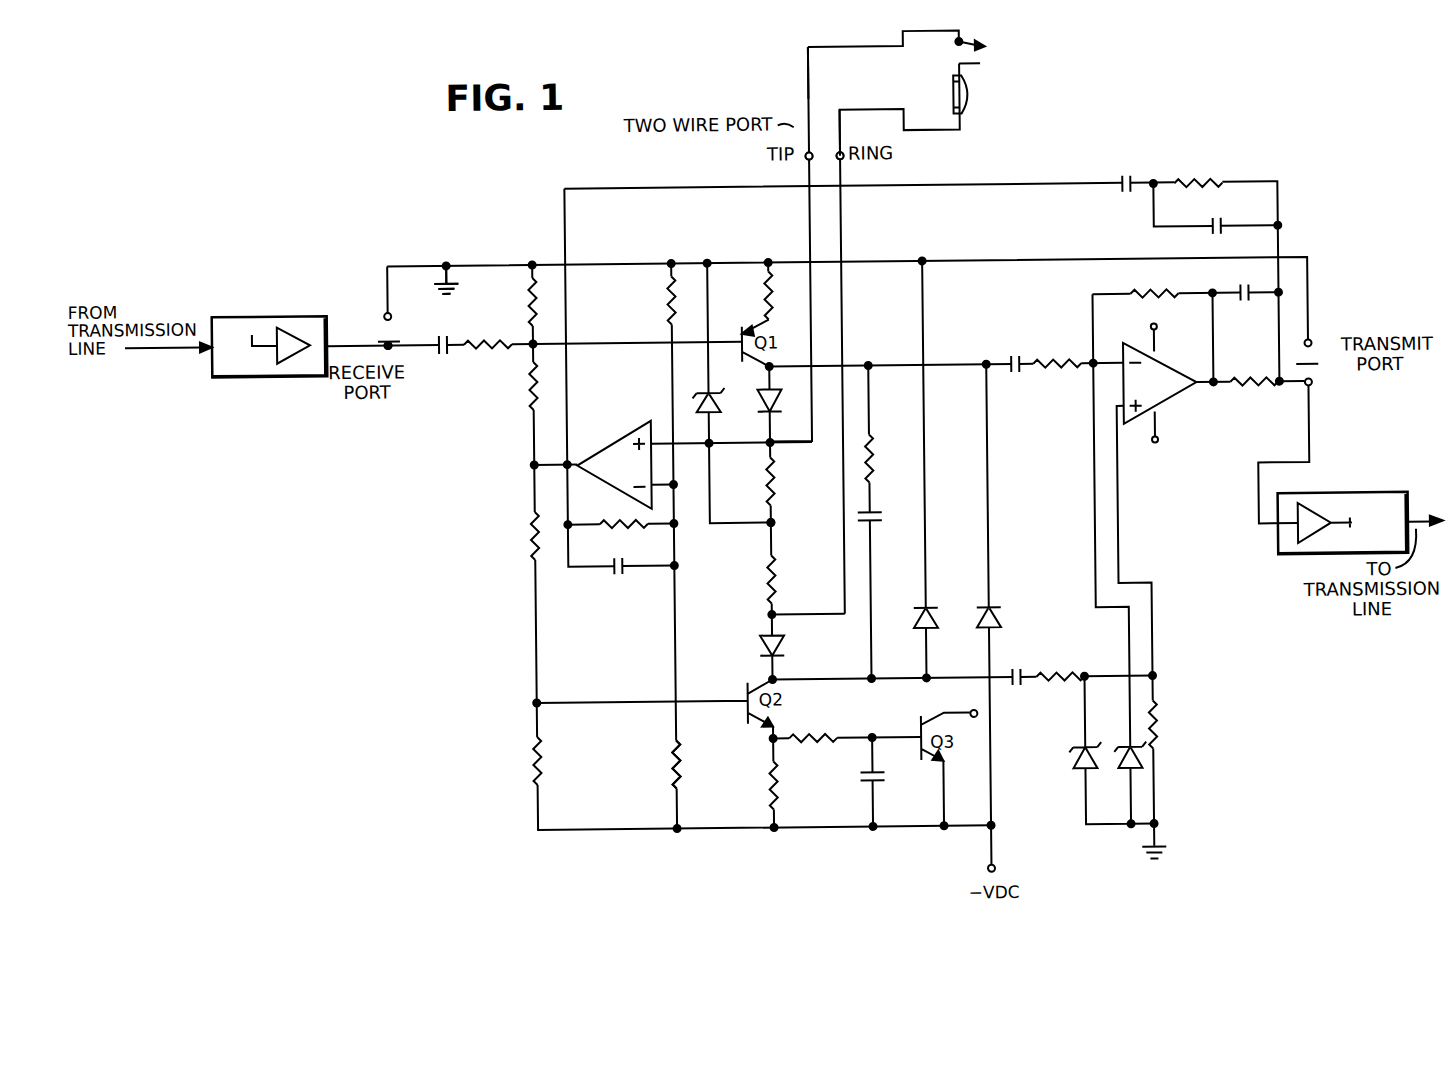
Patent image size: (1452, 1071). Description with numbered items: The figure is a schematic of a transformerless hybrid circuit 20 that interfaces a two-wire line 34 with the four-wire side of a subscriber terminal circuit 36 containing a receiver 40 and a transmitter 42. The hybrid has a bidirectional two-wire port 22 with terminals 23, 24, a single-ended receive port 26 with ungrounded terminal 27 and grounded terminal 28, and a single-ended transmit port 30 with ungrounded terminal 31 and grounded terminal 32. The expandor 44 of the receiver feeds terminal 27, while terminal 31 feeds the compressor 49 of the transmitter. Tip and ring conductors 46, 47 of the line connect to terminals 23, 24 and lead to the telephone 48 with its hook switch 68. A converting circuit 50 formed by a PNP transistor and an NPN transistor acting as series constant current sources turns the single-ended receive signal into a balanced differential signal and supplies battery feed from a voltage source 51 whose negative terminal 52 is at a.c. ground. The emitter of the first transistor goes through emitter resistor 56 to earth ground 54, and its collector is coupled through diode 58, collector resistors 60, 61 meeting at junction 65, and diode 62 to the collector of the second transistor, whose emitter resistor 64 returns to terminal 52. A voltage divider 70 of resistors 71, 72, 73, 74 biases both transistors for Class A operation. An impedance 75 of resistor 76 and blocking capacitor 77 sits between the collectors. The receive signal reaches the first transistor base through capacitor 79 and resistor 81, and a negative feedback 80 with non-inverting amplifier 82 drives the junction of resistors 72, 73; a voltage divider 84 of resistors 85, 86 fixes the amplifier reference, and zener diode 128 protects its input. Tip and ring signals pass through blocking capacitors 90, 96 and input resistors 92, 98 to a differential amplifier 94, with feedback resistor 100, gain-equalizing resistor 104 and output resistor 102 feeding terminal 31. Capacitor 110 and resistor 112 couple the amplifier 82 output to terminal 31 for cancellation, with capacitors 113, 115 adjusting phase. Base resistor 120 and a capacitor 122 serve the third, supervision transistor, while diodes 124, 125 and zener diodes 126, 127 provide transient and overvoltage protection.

The hybrid circuit 20 is at (610, 859).
The bidirectional two-wire transmission port 22 is at (843, 163).
The terminal 23 is at (810, 161).
The terminal 24 is at (846, 154).
The receive port 26 is at (389, 332).
The ungrounded terminal 27 is at (393, 347).
The grounded terminal 28 is at (387, 310).
The transmit port 30 is at (1307, 355).
The ungrounded terminal 31 is at (1314, 390).
The grounded terminal 32 is at (1313, 346).
The two-wire line 34 is at (790, 92).
The subscriber terminal circuit 36 is at (218, 382).
The communication receiver 40 is at (250, 311).
The communication transmitter 42 is at (1330, 498).
The expandor 44 is at (292, 321).
The tip conductor 46 is at (811, 66).
The ring conductor 47 is at (843, 111).
The telephone 48 is at (974, 98).
The compressor 49 is at (1296, 533).
The converting circuit 50 is at (632, 588).
The voltage source 51 is at (966, 876).
The negative terminal 52 is at (992, 874).
The earth ground 54 is at (452, 280).
The emitter resistor 56 is at (765, 303).
The diode 58 is at (779, 398).
The collector resistor 60 is at (766, 485).
The collector resistor 61 is at (766, 582).
The diode 62 is at (758, 646).
The emitter resistor 64 is at (780, 786).
The junction 65 is at (776, 524).
The hook switch 68 is at (984, 55).
The voltage divider 70 is at (486, 407).
The resistor 71 is at (527, 296).
The resistor 72 is at (528, 401).
The resistor 73 is at (528, 537).
The resistor 74 is at (530, 752).
The impedance 75 is at (880, 545).
The resistor 76 is at (876, 456).
The d.c. blocking capacitor 77 is at (878, 512).
The capacitor 79 is at (451, 341).
The negative feedback 80 is at (606, 420).
The resistor 81 is at (492, 352).
The non-inverting amplifier 82 is at (652, 425).
The voltage divider 84 is at (606, 517).
The resistor 85 is at (665, 306).
The resistor 86 is at (624, 562).
The d.c. blocking capacitor 90 is at (1016, 357).
The amplifier input resistor 92 is at (1068, 377).
The differential amplifier 94 is at (1168, 404).
The d.c. blocking capacitor 96 is at (1012, 690).
The input resistor 98 is at (1067, 678).
The resistor 100 is at (1130, 294).
The output resistor 102 is at (1250, 398).
The resistor 104 is at (1158, 726).
The capacitor 110 is at (1123, 180).
The resistor 112 is at (1222, 183).
The capacitor 113 is at (1245, 304).
The capacitor 115 is at (1210, 232).
The base resistor 120 is at (836, 737).
The capacitor 122 is at (884, 784).
The diode 124 is at (930, 626).
The diode 125 is at (996, 612).
The diode 126 is at (1078, 771).
The diode 127 is at (1124, 771).
The zener diode 128 is at (720, 399).